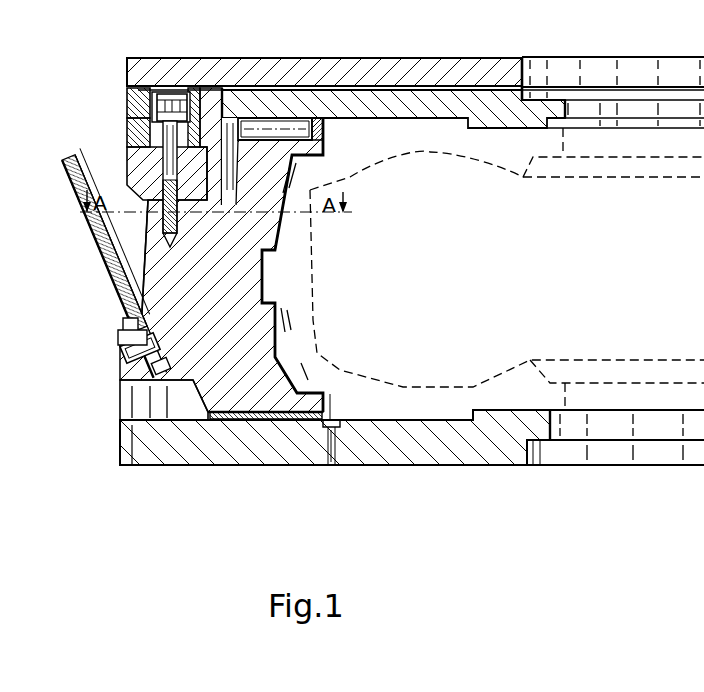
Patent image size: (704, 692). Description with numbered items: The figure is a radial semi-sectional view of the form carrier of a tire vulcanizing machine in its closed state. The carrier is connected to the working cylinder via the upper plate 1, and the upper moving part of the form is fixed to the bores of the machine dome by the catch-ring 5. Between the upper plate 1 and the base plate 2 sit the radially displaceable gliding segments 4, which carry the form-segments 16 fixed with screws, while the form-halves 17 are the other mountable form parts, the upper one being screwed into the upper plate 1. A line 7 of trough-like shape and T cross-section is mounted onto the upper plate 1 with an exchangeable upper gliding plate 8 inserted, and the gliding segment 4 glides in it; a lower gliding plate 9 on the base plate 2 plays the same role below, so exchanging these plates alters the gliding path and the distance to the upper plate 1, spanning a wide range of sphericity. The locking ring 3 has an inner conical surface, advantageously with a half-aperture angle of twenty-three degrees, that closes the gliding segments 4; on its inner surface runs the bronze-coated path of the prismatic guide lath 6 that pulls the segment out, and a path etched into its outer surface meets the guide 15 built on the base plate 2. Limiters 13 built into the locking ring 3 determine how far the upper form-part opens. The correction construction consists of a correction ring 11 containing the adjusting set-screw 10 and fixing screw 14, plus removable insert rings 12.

The upper plate 1 is at (270, 97).
The base plate 2 is at (122, 452).
The locking ring 3 is at (163, 290).
The gliding segment 4 is at (268, 224).
The catch-ring 5 is at (140, 72).
The prismatic guide lath 6 is at (160, 264).
The line 7 is at (322, 122).
The upper gliding plate 8 is at (324, 123).
The lower gliding plate 9 is at (264, 421).
The set-screw 10 is at (128, 108).
The correction ring 11 is at (138, 132).
The removable insert ring 12 is at (180, 152).
The limiter 13 is at (136, 314).
The fixing screw 14 is at (175, 92).
The guide 15 is at (97, 445).
The form-segment 16 is at (328, 429).
The form-half 17 is at (450, 130).